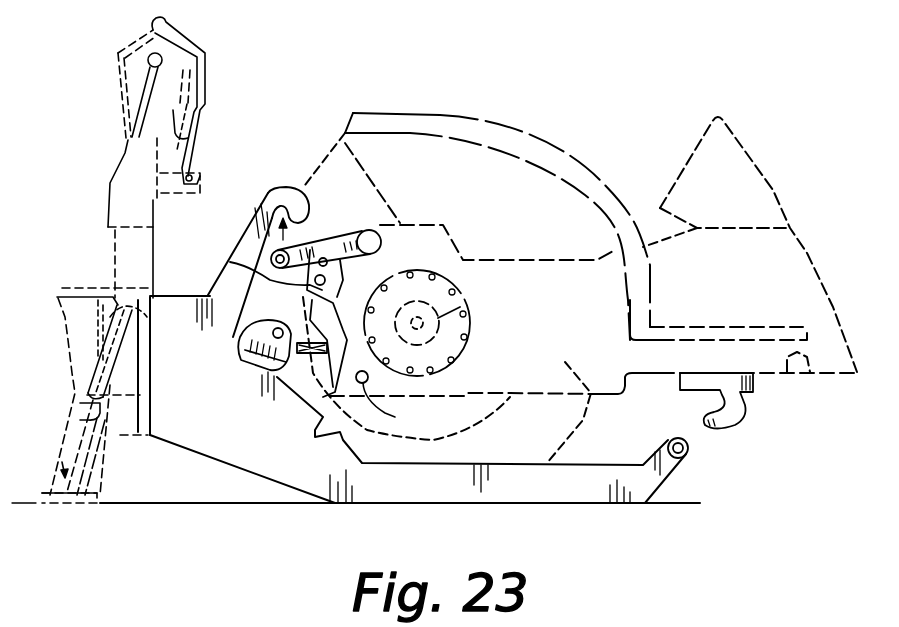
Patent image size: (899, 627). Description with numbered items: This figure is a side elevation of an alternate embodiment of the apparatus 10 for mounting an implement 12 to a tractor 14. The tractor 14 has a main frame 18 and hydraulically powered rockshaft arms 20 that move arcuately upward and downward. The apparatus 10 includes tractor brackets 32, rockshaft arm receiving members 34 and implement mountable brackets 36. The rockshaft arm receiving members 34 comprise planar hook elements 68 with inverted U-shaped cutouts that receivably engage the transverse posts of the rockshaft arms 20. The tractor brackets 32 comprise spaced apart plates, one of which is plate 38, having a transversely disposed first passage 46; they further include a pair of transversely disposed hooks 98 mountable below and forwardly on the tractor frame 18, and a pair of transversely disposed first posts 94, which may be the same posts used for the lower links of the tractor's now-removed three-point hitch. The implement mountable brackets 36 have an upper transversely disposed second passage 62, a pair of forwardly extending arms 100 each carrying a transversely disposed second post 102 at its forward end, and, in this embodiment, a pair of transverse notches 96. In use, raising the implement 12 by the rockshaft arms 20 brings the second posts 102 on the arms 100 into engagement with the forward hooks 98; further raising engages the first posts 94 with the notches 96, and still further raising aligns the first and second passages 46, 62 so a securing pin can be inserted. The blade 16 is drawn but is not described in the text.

The apparatus 10 is at (322, 70).
The implement 12 is at (96, 170).
The tractor 14 is at (544, 137).
The saw blade 16 is at (460, 300).
The main frame 18 is at (600, 405).
The rockshaft arms 20 is at (336, 232).
The tractor brackets 32 is at (356, 276).
The rockshaft arm receiving members 34 is at (241, 229).
The implement mountable brackets 36 is at (258, 448).
The plate 38 is at (327, 347).
The first passage 46 is at (230, 262).
The second passage 62 is at (238, 340).
The hook elements 68 is at (268, 196).
The first posts 94 is at (391, 400).
The notches 96 is at (340, 444).
The hooks 98 is at (753, 406).
The forwardly extending arms 100 is at (548, 421).
The second posts 102 is at (688, 450).